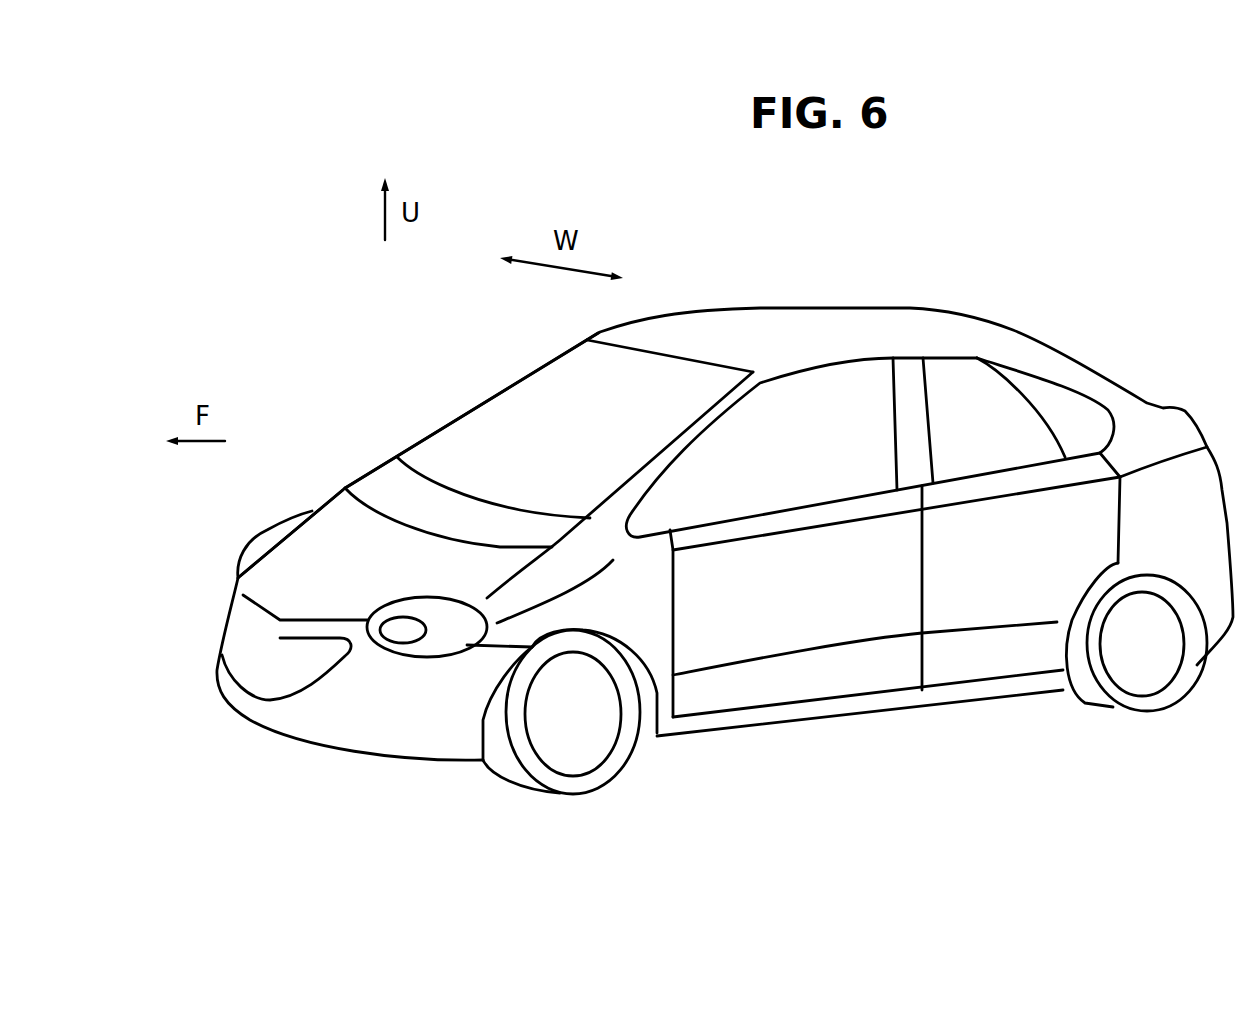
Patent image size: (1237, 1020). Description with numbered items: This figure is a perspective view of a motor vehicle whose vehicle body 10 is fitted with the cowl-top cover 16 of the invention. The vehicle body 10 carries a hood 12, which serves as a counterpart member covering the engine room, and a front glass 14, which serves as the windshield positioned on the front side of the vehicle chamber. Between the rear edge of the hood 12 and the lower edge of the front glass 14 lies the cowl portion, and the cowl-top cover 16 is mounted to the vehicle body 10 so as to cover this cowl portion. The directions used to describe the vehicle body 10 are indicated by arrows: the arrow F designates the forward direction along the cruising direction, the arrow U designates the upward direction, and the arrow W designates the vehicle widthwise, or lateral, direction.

The vehicle body 10 is at (925, 289).
The hood 12 is at (316, 527).
The front glass 14 is at (466, 420).
The cowl-top cover 16 is at (366, 470).